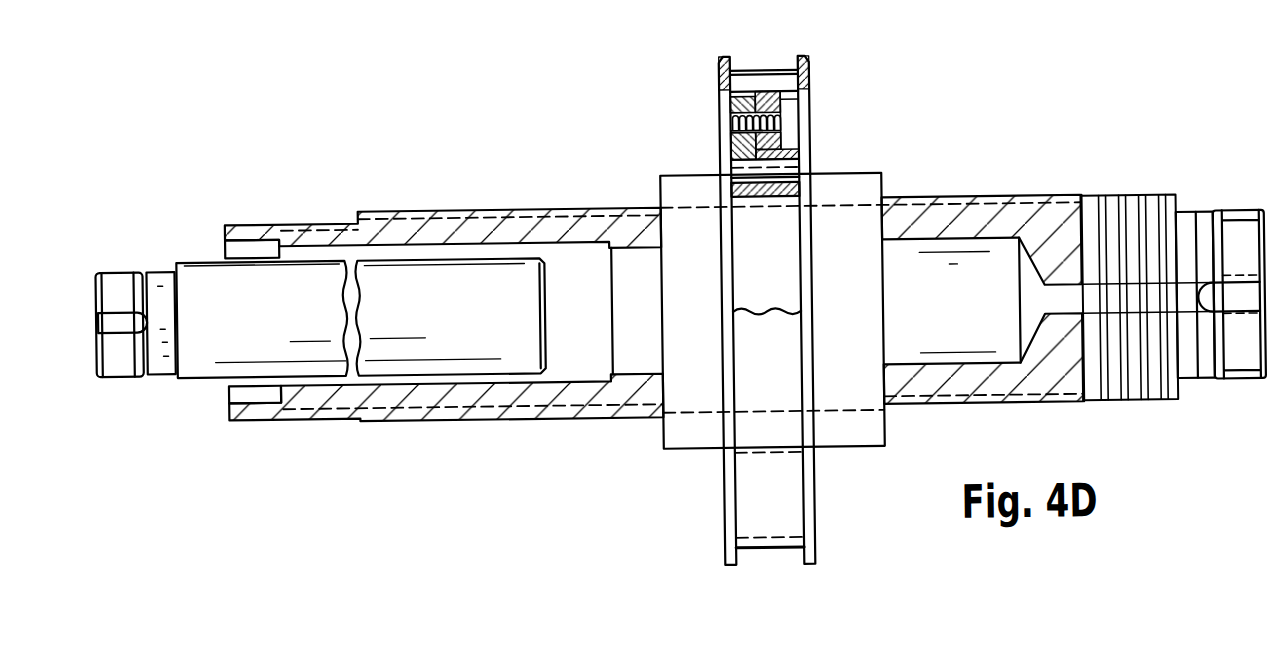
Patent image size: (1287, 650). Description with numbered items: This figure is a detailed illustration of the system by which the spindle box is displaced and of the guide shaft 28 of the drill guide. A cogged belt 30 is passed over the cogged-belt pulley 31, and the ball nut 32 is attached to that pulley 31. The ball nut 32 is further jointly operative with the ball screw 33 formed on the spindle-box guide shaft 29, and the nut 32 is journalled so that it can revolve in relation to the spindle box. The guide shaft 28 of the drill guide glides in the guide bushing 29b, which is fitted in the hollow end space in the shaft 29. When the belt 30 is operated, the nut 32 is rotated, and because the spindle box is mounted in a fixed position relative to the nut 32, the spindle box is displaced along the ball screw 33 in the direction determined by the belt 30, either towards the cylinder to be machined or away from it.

The guide shaft 28 is at (423, 273).
The spindle-box guide shaft 29 is at (1169, 184).
The guide bushing 29b is at (256, 241).
The cogged belt 30 is at (813, 59).
The cogged-belt pulley 31 is at (811, 98).
The ball nut 32 is at (678, 186).
The ball screw 33 is at (1112, 195).